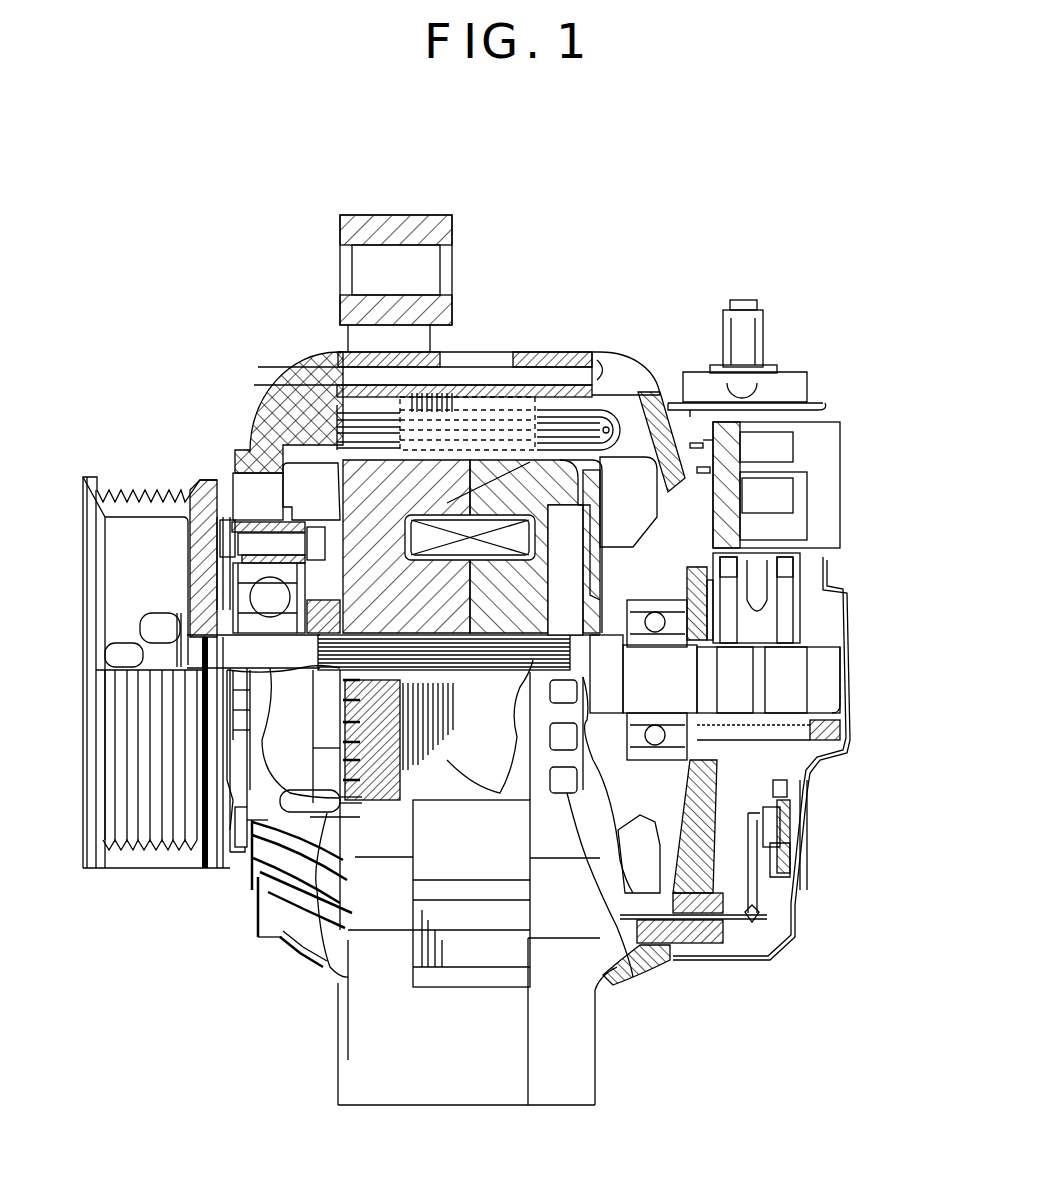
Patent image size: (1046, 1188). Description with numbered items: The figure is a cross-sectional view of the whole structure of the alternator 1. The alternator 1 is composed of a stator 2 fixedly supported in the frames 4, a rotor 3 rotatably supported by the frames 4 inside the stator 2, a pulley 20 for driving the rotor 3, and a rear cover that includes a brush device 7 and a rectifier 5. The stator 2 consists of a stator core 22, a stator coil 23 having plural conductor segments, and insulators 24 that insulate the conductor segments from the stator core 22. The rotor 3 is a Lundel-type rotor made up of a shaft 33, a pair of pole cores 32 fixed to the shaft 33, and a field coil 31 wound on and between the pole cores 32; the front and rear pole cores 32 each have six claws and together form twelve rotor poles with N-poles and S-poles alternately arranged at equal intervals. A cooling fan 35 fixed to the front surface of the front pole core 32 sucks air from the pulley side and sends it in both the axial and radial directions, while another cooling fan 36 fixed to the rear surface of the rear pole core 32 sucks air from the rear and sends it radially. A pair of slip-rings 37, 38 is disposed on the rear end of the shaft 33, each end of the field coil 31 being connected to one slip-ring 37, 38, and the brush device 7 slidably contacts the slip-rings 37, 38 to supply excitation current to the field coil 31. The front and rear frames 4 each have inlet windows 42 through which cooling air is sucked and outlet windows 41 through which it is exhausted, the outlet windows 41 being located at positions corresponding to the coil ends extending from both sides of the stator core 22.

The alternator 1 is at (640, 224).
The stator 2 is at (593, 490).
The rotor 3 is at (295, 458).
The frames 4 is at (370, 1092).
The rectifier 5 is at (773, 817).
The brush device 7 is at (805, 577).
The pulley 20 is at (130, 497).
The stator core 22 is at (468, 515).
The stator coil 23 is at (570, 410).
The insulators 24 is at (562, 405).
The field coil 31 is at (520, 352).
The pole cores 32 is at (338, 485).
The shaft 33 is at (197, 587).
The cooling fan 35 is at (252, 445).
The cooling fan 36 is at (637, 518).
The slip-ring 37 is at (733, 663).
The slip-ring 38 is at (787, 680).
The outlet windows 41 is at (303, 963).
The inlet windows 42 is at (242, 487).